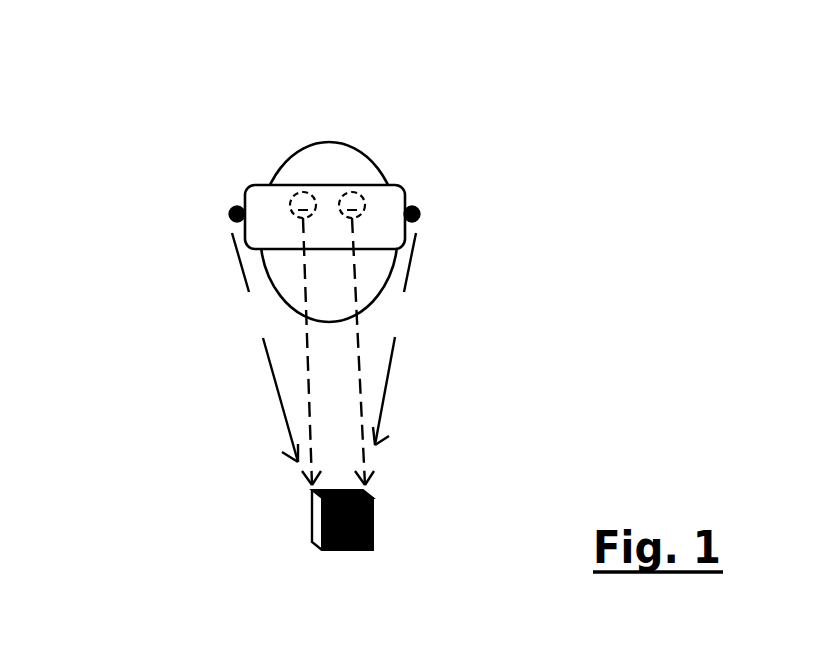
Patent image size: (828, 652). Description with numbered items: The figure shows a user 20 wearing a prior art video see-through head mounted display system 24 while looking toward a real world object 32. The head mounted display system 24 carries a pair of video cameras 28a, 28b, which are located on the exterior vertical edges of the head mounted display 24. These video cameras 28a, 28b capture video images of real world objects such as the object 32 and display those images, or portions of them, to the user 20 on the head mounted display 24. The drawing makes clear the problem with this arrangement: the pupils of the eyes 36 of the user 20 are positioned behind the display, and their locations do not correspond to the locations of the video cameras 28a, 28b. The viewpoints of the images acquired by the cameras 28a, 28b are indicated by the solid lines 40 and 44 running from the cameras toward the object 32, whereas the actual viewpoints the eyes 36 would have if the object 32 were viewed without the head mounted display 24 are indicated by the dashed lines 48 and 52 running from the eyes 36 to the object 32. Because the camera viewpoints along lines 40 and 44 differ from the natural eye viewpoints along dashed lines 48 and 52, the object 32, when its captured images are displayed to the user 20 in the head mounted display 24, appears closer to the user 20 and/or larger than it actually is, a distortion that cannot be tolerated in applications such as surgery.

The user 20 is at (358, 155).
The head mounted display system 24 is at (403, 188).
The video camera 28a is at (228, 208).
The video camera 28b is at (423, 214).
The object 32 is at (380, 522).
The eyes 36 is at (338, 192).
The line 40 is at (265, 347).
The line 44 is at (397, 339).
The dashed line 48 is at (309, 351).
The dashed line 52 is at (360, 351).